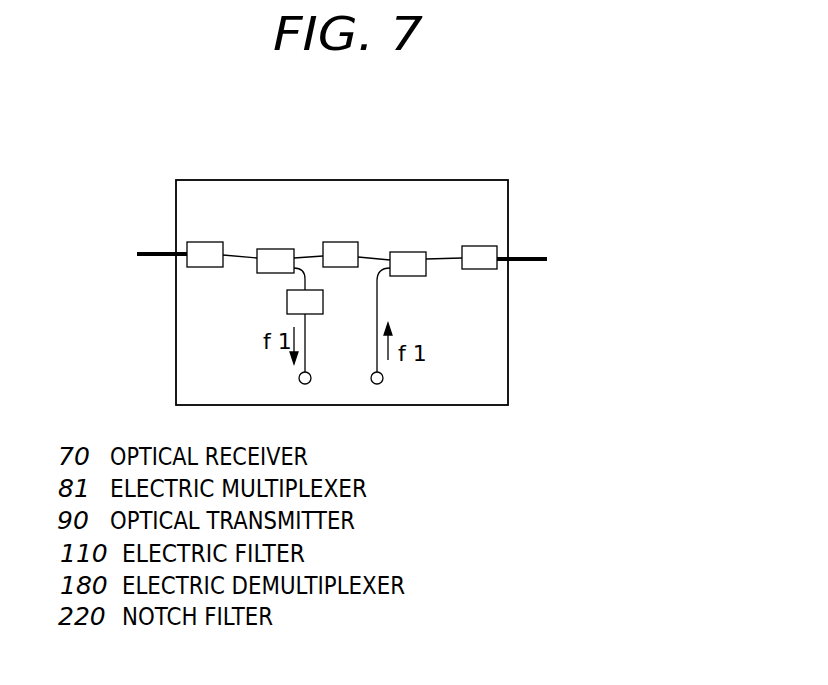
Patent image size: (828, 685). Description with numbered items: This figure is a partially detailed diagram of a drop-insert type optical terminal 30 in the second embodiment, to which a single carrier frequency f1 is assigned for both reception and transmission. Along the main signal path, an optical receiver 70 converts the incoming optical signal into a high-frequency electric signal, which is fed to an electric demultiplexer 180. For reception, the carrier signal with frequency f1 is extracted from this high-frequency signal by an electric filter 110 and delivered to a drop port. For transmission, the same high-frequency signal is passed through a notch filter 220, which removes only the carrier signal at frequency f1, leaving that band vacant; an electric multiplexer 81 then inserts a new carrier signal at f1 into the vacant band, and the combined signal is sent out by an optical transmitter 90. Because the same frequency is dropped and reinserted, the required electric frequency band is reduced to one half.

The optical terminal 30 is at (338, 180).
The optical receiver 70 is at (203, 242).
The electric multiplexer 81 is at (405, 252).
The optical transmitter 90 is at (473, 246).
The electric filter 110 is at (287, 302).
The electric demultiplexer 180 is at (268, 249).
The notch filter 220 is at (337, 242).